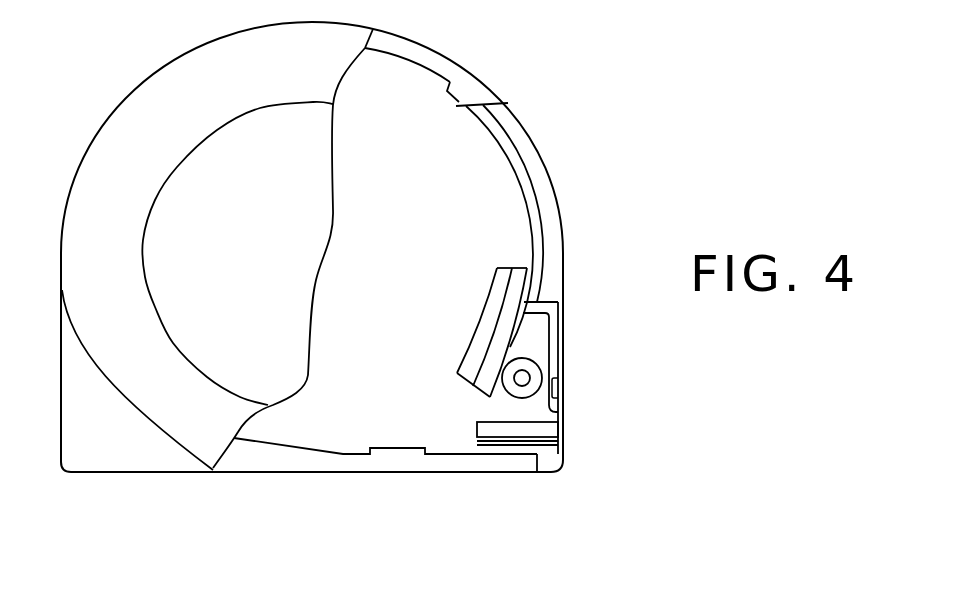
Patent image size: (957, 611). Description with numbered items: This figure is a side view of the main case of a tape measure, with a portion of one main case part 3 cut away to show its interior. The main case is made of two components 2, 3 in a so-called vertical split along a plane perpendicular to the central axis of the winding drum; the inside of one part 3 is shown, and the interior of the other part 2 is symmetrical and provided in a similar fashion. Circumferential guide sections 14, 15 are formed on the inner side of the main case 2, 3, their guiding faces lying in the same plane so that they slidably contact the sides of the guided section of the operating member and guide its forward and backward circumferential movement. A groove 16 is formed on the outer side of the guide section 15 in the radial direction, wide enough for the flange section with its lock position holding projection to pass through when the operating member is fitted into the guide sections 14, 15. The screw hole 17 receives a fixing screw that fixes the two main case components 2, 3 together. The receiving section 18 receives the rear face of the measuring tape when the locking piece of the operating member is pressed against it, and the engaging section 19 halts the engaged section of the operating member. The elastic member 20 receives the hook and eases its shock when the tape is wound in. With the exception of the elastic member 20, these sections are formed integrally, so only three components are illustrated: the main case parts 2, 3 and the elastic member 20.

The main case component 2 is at (112, 137).
The main case component 3 is at (470, 70).
The guide section 14 is at (517, 162).
The guide section 15 is at (490, 325).
The groove 16 is at (510, 307).
The screw hole 17 is at (530, 371).
The receiving section 18 is at (400, 456).
The engaging section 19 is at (443, 86).
The elastic member 20 is at (553, 462).